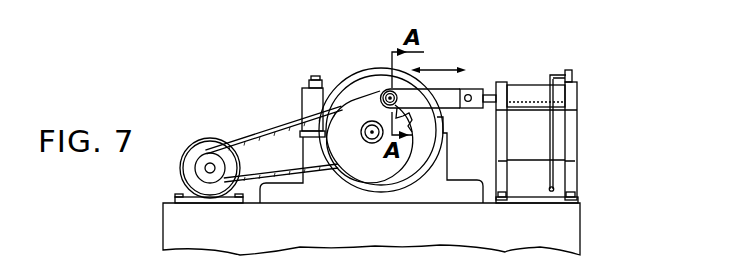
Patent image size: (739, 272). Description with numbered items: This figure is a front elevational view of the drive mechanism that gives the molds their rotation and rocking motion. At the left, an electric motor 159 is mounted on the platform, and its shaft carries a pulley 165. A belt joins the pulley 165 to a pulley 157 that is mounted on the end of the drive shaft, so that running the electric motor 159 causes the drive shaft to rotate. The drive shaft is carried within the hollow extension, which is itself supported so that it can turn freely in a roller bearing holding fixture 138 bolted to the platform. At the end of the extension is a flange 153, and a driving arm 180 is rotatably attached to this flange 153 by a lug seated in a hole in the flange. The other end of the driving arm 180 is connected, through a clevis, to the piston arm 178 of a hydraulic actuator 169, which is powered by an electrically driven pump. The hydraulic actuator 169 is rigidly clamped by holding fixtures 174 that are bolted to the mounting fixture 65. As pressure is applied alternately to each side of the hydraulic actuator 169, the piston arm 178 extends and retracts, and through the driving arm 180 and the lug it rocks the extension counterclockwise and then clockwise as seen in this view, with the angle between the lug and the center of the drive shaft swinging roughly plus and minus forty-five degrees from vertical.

The mounting fixture 65 is at (462, 192).
The roller bearing holding fixture 138 is at (349, 66).
The flange 153 is at (378, 175).
The pulley 157 is at (353, 142).
The electric motor 159 is at (202, 143).
The pulley 165 is at (197, 172).
The hydraulic actuator 169 is at (535, 95).
The holding fixtures 174 is at (577, 138).
The piston arm 178 is at (489, 89).
The driving arm 180 is at (453, 97).